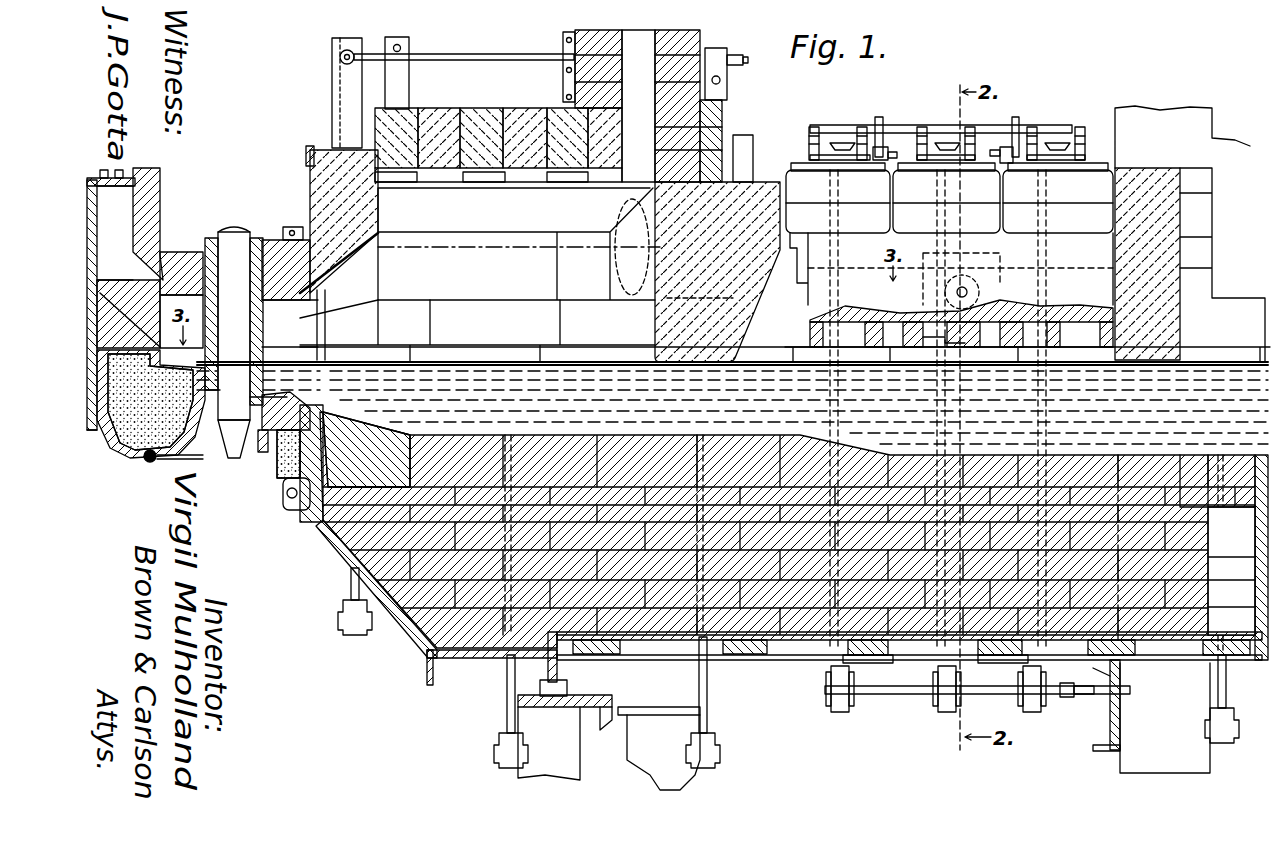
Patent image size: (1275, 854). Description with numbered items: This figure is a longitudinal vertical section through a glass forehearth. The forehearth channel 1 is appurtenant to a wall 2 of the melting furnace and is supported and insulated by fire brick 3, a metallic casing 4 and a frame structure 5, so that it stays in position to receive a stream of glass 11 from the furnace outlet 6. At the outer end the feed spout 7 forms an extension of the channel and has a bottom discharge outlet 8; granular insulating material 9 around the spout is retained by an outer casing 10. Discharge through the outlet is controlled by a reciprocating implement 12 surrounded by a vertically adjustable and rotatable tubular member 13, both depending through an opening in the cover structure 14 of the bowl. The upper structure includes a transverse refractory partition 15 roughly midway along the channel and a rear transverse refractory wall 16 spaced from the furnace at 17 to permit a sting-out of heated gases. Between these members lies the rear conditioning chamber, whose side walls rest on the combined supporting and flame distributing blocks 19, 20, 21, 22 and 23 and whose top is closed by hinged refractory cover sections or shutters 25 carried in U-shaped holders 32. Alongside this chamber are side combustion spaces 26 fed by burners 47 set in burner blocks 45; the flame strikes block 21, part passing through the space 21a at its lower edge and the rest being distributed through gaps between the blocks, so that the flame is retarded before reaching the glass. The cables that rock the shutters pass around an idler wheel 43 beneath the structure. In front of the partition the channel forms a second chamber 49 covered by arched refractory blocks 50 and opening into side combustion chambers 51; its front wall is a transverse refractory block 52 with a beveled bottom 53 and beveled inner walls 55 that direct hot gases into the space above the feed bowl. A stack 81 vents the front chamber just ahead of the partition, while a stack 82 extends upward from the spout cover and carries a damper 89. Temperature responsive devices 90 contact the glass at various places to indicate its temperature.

The forehearth channel 1 is at (797, 612).
The wall of glass melting furnace 2 is at (1258, 562).
The fire brick 3 is at (908, 600).
The metallic casing 4 is at (825, 640).
The frame structure 5 is at (1110, 735).
The outlet of glass melting furnace 6 is at (1262, 455).
The feed spout 7 is at (262, 442).
The bottom discharge outlet 8 is at (232, 455).
The granular insulating material 9 is at (135, 448).
The outer casing 10 is at (280, 478).
The stream of glass 11 is at (1232, 360).
The implement 12 is at (235, 240).
The tubular member 13 is at (262, 332).
The cover structure 14 is at (178, 262).
The transverse refractory partition 15 is at (785, 182).
The rear transverse refractory wall 16 is at (1160, 205).
The space between rear wall and furnace 17 is at (1205, 285).
The supporting and flame distributing block 19 is at (812, 330).
The supporting and flame distributing block 20 is at (872, 330).
The supporting and flame distributing block 21 is at (912, 330).
The space at lower edge of block 21a is at (935, 337).
The supporting and flame distributing block 22 is at (1060, 335).
The supporting and flame distributing block 23 is at (1098, 322).
The hinged refractory cover sections or shutters 25 is at (803, 180).
The side firing chambers or combustion spaces 26 is at (1070, 300).
The U-shaped holders 32 is at (838, 160).
The idler pulley or wheel 43 is at (838, 712).
The burner block 45 is at (1005, 250).
The burner 47 is at (962, 286).
The second or front chamber 49 is at (477, 331).
The refractory blocks 50 is at (435, 118).
The side combustion chambers 51 is at (518, 245).
The transverse refractory block 52 is at (330, 180).
The beveled bottom wall 53 is at (320, 258).
The beveled inner walls 55 is at (330, 337).
The stack 81 is at (680, 32).
The stack 82 is at (130, 213).
The damper 89 is at (145, 175).
The temperature responsive devices 90 is at (350, 608).